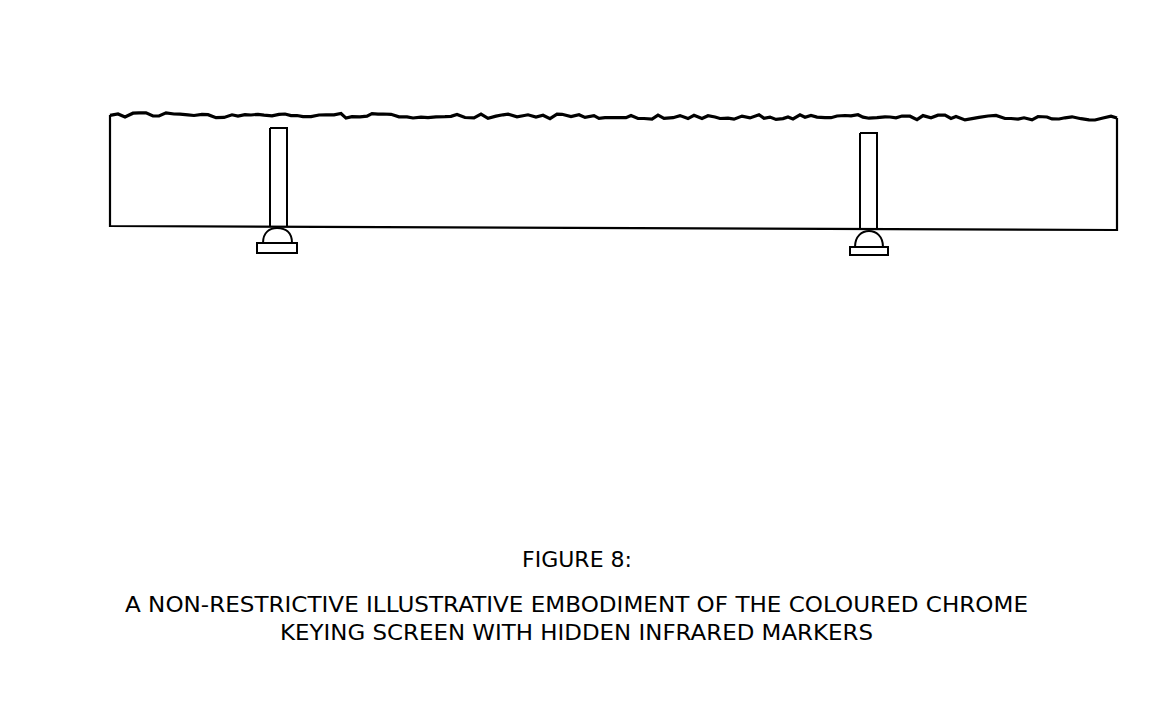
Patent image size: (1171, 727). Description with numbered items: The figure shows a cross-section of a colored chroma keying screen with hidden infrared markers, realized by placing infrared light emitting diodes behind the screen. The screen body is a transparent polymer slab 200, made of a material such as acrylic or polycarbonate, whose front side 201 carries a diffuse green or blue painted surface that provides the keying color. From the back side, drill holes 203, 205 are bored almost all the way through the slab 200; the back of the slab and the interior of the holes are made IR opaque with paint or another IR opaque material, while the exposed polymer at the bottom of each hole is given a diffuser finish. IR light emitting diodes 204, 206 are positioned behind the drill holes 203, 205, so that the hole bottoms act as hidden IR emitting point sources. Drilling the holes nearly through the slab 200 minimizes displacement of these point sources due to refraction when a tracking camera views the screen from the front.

The transparent polymer slab 200 is at (1077, 210).
The front side 201 is at (1013, 118).
The drill hole 203 is at (880, 173).
The IR light emitting diode 204 is at (852, 248).
The drill hole 205 is at (278, 185).
The IR light emitting diode 206 is at (298, 250).